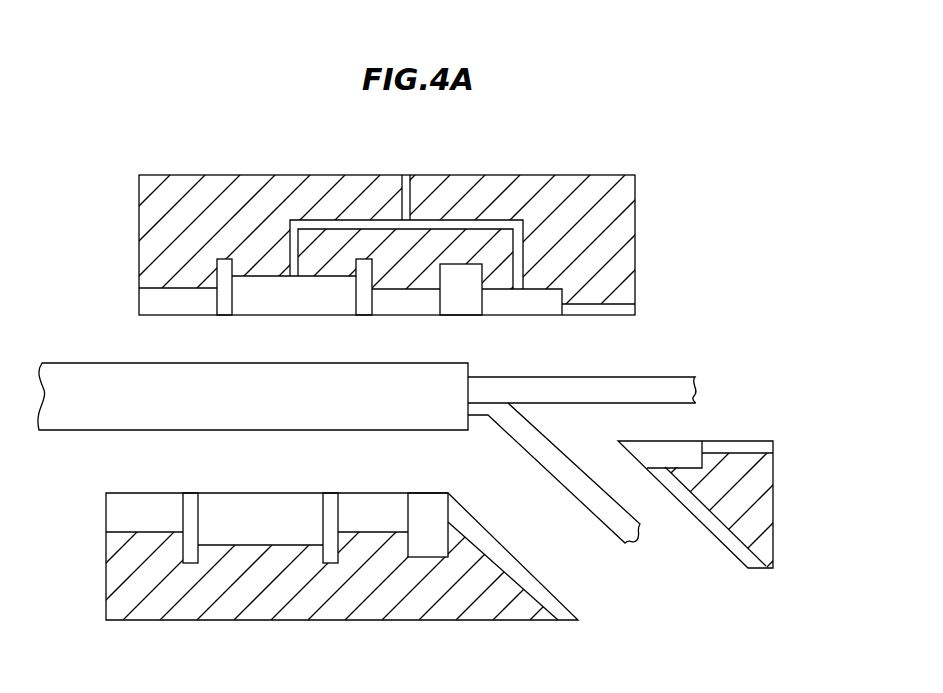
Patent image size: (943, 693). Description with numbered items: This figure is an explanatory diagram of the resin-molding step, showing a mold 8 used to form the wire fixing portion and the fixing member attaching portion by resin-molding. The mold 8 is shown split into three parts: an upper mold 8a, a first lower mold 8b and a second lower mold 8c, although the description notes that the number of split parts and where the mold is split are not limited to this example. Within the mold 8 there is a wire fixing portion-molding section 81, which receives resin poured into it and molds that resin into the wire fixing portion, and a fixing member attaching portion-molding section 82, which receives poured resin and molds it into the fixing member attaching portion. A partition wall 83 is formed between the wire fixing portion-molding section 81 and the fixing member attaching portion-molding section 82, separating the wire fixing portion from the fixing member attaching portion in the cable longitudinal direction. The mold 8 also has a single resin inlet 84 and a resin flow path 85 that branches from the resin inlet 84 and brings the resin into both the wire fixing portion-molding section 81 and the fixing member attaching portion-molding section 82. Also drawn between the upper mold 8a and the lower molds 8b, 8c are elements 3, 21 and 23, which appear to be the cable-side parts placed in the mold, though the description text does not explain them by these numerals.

The mold 8 is at (133, 149).
The upper mold 8a is at (636, 175).
The first lower mold 8b is at (106, 621).
The second lower mold 8c is at (769, 569).
The wire fixing portion-molding section 81 is at (553, 297).
The fixing member attaching portion-molding section 82 is at (240, 288).
The partition wall 83 is at (393, 283).
The resin inlet 84 is at (405, 176).
The resin flow path 85 is at (452, 221).
The lead frame 3 is at (82, 380).
The lead 21 is at (688, 380).
The bent lead portion 23 is at (620, 531).